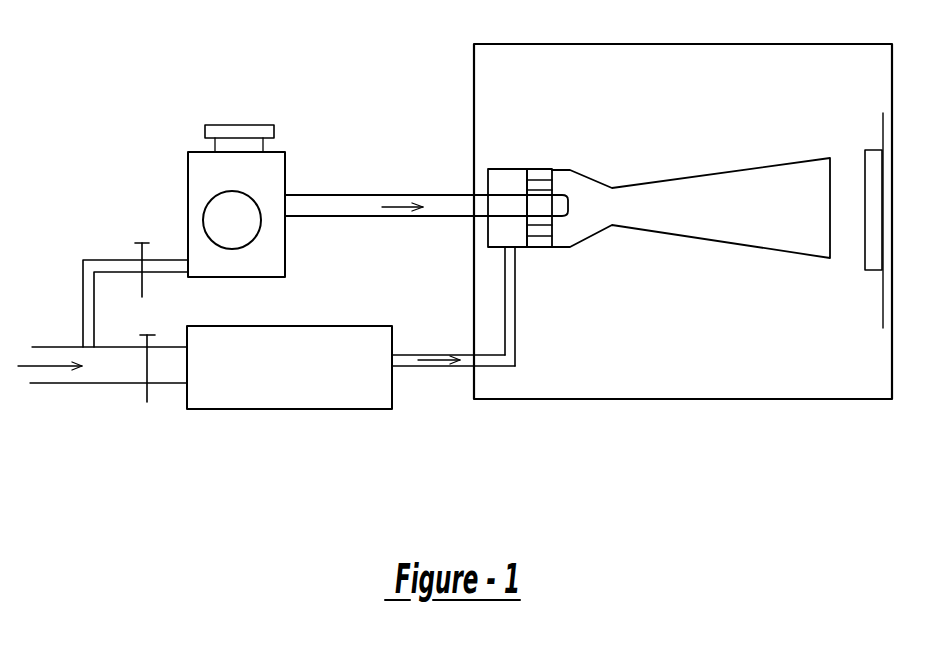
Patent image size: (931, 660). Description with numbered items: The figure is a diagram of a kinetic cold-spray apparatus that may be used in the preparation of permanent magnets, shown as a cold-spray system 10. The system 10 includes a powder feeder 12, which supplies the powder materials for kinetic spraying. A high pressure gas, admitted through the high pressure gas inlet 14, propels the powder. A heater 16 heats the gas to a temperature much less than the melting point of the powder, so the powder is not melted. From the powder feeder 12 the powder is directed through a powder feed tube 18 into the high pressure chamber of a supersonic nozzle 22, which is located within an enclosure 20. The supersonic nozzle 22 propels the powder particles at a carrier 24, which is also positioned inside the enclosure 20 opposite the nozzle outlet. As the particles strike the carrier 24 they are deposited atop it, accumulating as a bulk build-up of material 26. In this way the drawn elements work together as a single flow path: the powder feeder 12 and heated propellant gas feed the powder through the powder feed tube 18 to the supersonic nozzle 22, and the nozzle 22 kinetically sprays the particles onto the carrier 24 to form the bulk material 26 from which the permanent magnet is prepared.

The cold-spray system 10 is at (78, 130).
The powder feeder 12 is at (198, 152).
The high pressure gas inlet 14 is at (48, 352).
The heater 16 is at (294, 377).
The powder feed tube 18 is at (365, 195).
The enclosure 20 is at (474, 64).
The supersonic nozzle 22 is at (648, 183).
The carrier 24 is at (883, 128).
The bulk material 26 is at (865, 252).